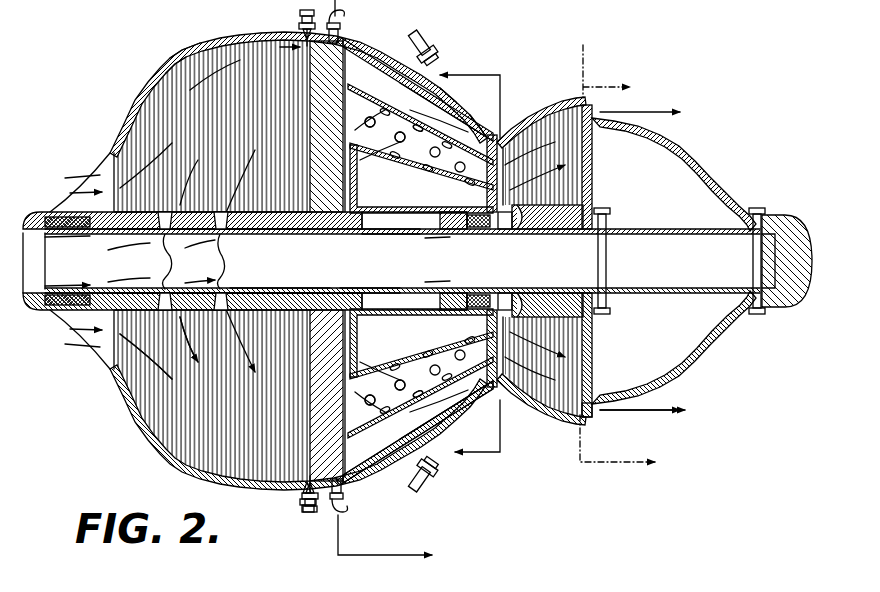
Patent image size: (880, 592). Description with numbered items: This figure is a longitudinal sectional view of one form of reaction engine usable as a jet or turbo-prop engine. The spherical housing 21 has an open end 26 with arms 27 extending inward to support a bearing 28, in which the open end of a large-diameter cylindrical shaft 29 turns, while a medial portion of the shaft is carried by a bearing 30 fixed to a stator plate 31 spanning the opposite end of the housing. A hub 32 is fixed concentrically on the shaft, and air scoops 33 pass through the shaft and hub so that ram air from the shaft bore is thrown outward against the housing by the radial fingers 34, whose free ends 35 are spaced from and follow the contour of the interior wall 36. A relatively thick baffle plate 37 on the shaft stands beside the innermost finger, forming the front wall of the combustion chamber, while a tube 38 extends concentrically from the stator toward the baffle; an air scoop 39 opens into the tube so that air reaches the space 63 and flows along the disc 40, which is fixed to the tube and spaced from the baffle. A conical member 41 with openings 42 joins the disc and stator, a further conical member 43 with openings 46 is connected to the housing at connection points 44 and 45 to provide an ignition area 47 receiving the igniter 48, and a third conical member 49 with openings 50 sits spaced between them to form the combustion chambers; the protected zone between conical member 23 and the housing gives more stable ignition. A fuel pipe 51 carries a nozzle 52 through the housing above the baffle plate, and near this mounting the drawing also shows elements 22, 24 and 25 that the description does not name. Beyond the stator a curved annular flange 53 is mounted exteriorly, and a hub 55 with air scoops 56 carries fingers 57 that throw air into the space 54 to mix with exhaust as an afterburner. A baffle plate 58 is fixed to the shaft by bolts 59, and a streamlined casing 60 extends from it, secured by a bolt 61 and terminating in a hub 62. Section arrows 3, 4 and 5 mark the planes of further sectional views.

The section line 3- 3 is at (383, 291).
The section line 4- 4 is at (470, 264).
The section line 5- 5 is at (617, 265).
The spherical housing 21 is at (178, 455).
The nut 22 is at (300, 512).
The conical member 23 is at (378, 468).
The bolt 24 is at (308, 516).
The bolt head 25 is at (298, 505).
The open end 26 is at (110, 165).
The arms 27 is at (105, 358).
The bearing 28 is at (60, 212).
The cylindrical shaft 29 is at (250, 292).
The bearing 30 is at (466, 222).
The stator plate 31 is at (497, 140).
The hub 32 is at (250, 230).
The air scoops 33 is at (224, 250).
The fingers 34 is at (195, 395).
The free ends 35 is at (172, 112).
The interior wall 36 is at (180, 76).
The baffle plate 37 is at (358, 288).
The tube 38 is at (452, 292).
The air scoop 39 is at (368, 236).
The disc 40 is at (352, 191).
The conical member 41 is at (380, 155).
The openings 42 is at (446, 176).
The further conical member 43 is at (418, 261).
The connection point 44 is at (350, 54).
The connection point 45 is at (505, 120).
The openings 46 is at (446, 261).
The ignition area 47 is at (450, 82).
The igniter 48 is at (425, 38).
The third conical member 49 is at (420, 261).
The openings 50 is at (420, 249).
The fuel pipe 51 is at (338, 20).
The nozzle 52 is at (300, 33).
The curved annular flange 53 is at (520, 415).
The space 54 is at (592, 402).
The hub 55 is at (555, 232).
The air scoops 56 is at (520, 232).
The fingers 57 is at (580, 155).
The baffle plate 58 is at (596, 195).
The bolts 59 is at (607, 250).
The streamlined casing 60 is at (674, 261).
The bolt 61 is at (752, 249).
The hub 62 is at (790, 226).
The space 63 is at (418, 226).